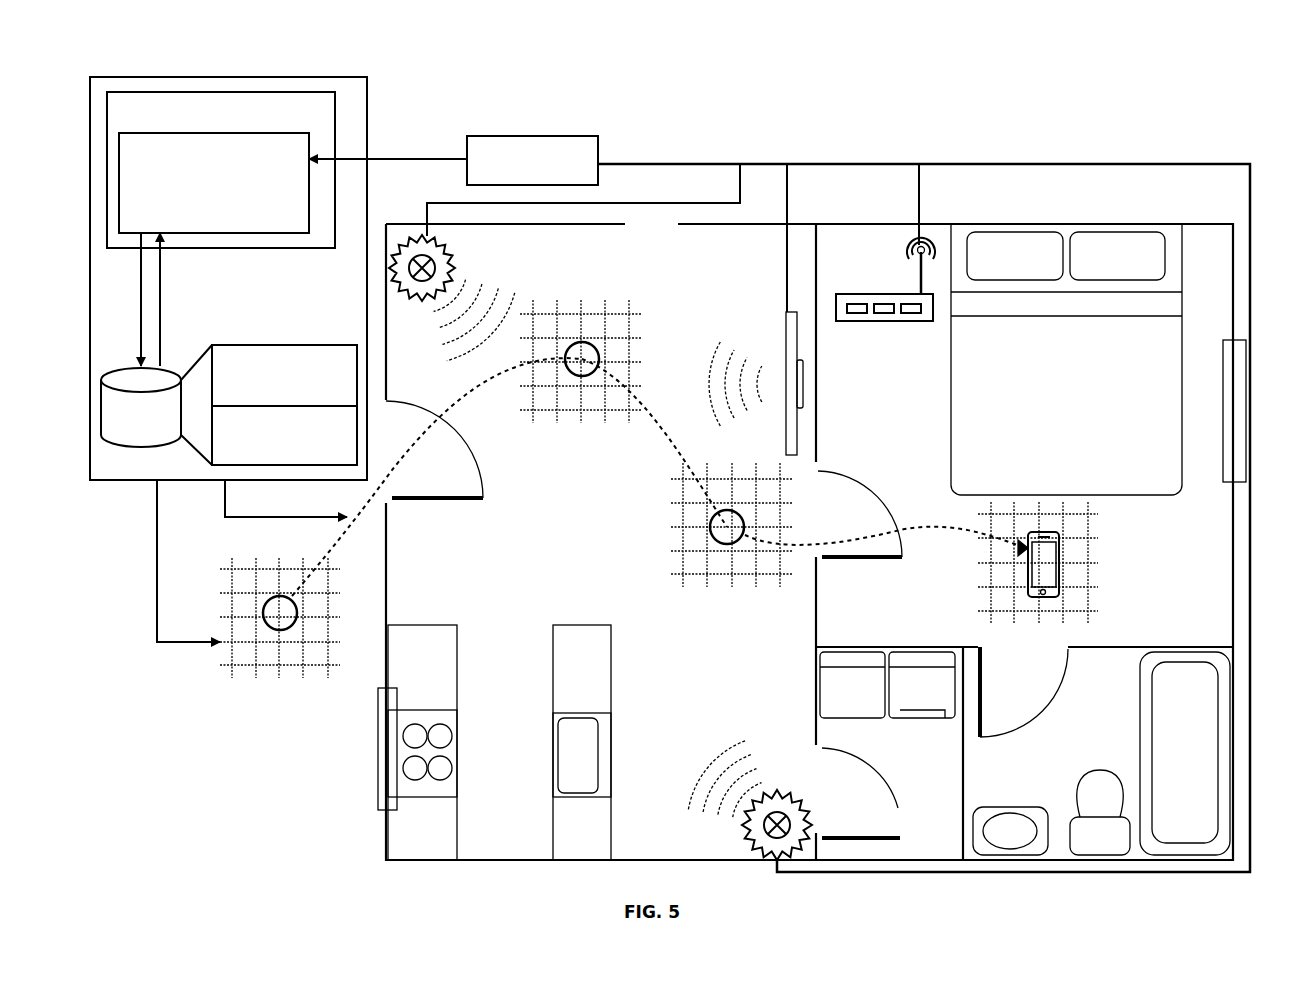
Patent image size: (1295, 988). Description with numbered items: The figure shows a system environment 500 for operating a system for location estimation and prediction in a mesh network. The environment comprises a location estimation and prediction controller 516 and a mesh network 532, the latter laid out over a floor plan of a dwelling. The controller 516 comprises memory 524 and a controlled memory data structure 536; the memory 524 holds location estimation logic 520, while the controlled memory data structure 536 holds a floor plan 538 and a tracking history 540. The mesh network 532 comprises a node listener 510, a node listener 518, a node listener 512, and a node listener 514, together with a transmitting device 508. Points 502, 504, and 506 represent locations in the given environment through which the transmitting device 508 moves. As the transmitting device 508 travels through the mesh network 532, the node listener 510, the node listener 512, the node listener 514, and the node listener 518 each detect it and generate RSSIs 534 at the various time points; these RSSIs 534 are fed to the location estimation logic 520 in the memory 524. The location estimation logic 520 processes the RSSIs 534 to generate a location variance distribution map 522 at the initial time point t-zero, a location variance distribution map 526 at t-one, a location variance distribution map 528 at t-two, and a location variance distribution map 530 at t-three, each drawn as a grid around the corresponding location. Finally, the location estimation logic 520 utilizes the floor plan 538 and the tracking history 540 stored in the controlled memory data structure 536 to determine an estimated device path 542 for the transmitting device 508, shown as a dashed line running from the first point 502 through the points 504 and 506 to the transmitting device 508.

The system environment 500 is at (1160, 105).
The point 502 is at (297, 620).
The point 504 is at (598, 358).
The point 506 is at (744, 523).
The transmitting device 508 is at (1043, 532).
The node listener 510 is at (455, 268).
The node listener 512 is at (885, 279).
The node listener 514 is at (812, 825).
The location estimation and prediction controller 516 is at (228, 259).
The node listener 518 is at (792, 312).
The location estimation logic 520 is at (214, 183).
The location variance distribution map 522 is at (248, 680).
The memory 524 is at (221, 170).
The location variance distribution map 526 is at (612, 300).
The location variance distribution map 528 is at (670, 522).
The location variance distribution map 530 is at (1098, 565).
The mesh network 532 is at (838, 518).
The RSSIs 534 is at (532, 160).
The controlled memory data structure 536 is at (141, 407).
The floor plan 538 is at (284, 375).
The tracking history 540 is at (284, 435).
The estimated device path 542 is at (910, 527).